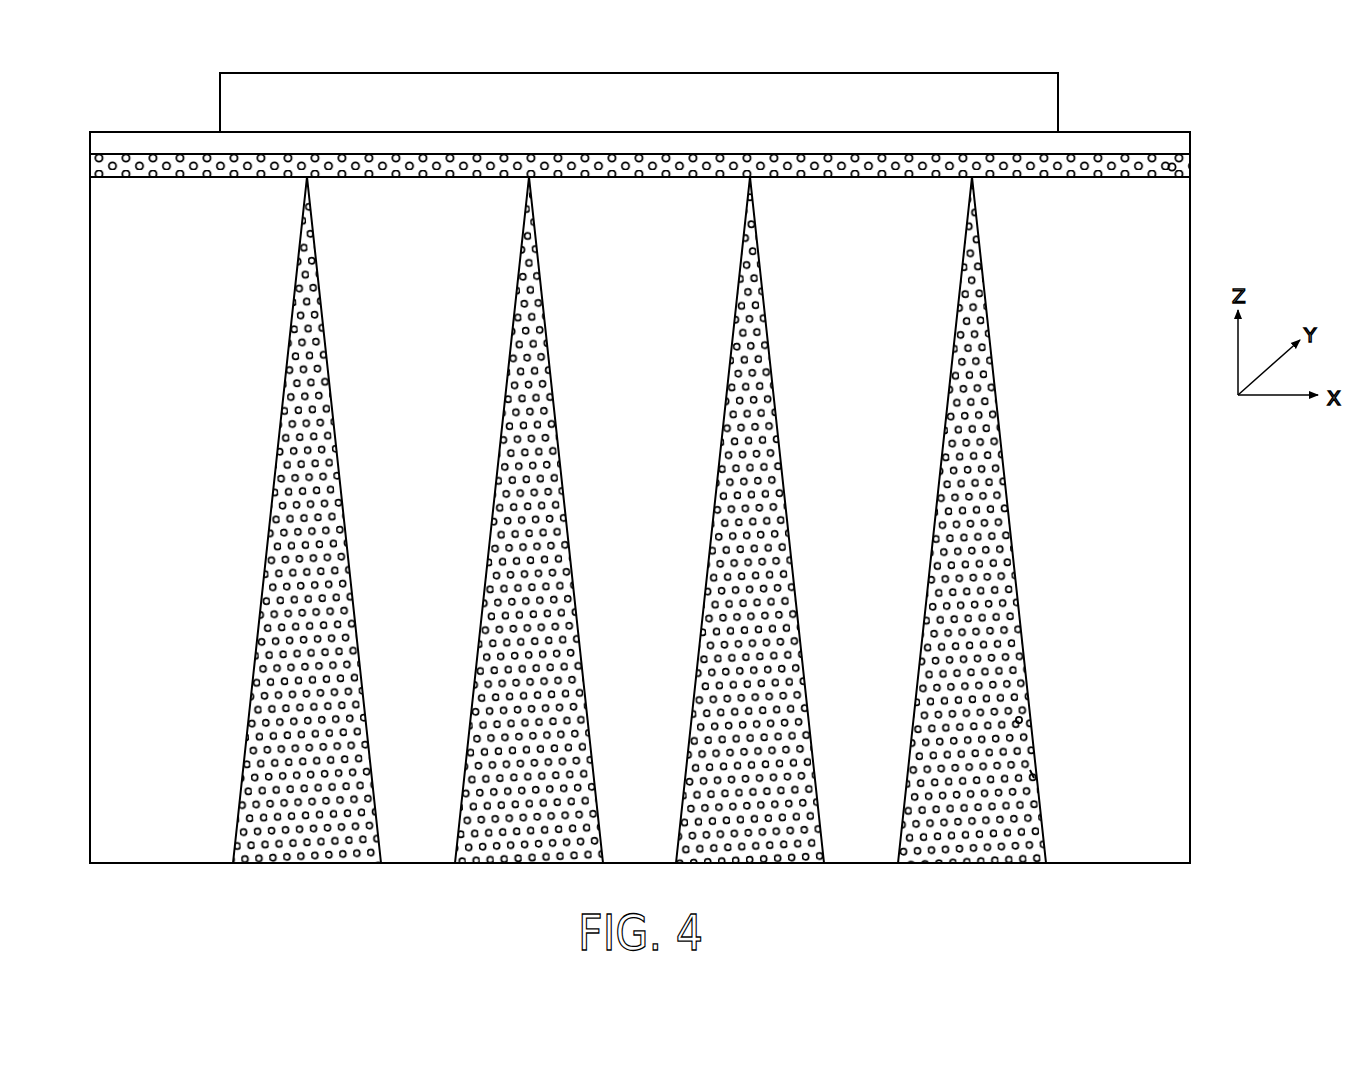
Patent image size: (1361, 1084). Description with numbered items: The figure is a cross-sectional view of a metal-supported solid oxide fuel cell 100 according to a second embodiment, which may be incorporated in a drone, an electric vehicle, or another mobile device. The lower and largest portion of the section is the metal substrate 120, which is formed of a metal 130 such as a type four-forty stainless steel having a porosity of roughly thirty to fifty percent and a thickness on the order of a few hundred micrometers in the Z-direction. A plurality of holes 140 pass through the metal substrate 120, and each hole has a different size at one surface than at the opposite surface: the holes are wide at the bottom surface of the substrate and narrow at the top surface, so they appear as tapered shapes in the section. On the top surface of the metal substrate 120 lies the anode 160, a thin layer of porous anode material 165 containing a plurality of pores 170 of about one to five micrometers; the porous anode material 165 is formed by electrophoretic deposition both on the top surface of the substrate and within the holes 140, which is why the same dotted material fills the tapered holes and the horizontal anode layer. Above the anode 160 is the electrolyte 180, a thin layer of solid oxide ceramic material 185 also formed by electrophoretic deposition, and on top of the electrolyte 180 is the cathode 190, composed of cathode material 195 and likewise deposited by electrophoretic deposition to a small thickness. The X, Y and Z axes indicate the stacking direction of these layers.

The solid oxide fuel cell 100 is at (145, 99).
The metal substrate 120 is at (1190, 573).
The metal 130 is at (1135, 488).
The holes 140 is at (1023, 635).
The anode 160 is at (1192, 168).
The porous anode material 165 is at (1167, 177).
The pores 170 is at (1172, 167).
The electrolyte 180 is at (1190, 140).
The solid oxide ceramic material 185 is at (1158, 142).
The cathode 190 is at (1058, 112).
The cathode material 195 is at (1018, 92).